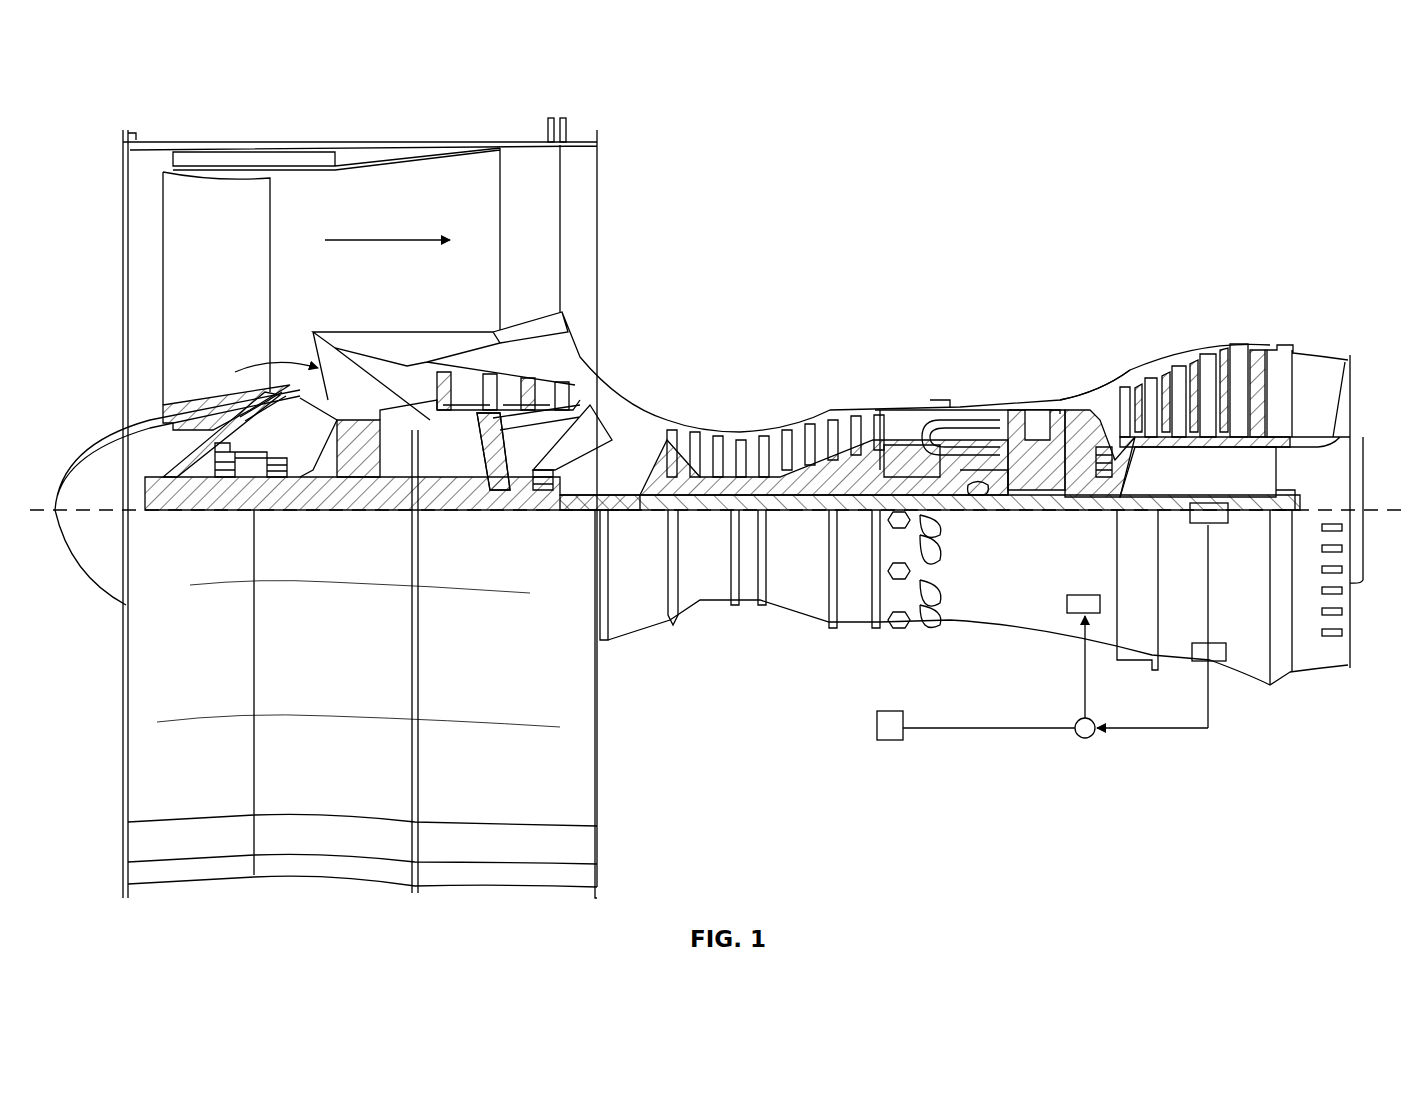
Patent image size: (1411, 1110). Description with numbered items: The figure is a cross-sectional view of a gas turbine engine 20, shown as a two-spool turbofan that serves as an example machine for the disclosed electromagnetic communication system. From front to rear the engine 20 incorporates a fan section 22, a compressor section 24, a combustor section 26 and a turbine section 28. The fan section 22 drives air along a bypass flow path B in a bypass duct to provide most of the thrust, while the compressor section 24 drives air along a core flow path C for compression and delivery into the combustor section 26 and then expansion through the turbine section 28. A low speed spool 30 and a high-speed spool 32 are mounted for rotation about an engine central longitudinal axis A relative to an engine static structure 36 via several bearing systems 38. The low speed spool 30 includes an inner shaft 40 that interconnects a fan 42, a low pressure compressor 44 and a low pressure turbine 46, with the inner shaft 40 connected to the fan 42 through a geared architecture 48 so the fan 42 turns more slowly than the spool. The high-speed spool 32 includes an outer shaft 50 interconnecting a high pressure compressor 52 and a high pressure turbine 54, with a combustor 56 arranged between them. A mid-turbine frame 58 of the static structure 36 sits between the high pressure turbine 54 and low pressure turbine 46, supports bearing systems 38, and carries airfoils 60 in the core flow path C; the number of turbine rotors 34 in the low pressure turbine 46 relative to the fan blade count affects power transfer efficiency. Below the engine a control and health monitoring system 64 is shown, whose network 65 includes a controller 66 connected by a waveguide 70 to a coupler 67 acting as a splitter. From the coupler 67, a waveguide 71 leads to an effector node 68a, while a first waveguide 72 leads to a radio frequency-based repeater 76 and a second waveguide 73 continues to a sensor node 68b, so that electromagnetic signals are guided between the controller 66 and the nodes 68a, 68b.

The gas turbine engine 20 is at (1170, 178).
The fan section 22 is at (397, 130).
The compressor section 24 is at (788, 366).
The combustor section 26 is at (958, 368).
The turbine section 28 is at (1080, 318).
The low speed spool 30 is at (815, 512).
The high-speed spool 32 is at (873, 440).
The turbine rotors 34 is at (1290, 462).
The engine static structure 36 is at (855, 628).
The bearing systems 38 is at (218, 477).
The inner shaft 40 is at (610, 515).
The fan 42 is at (237, 262).
The low pressure compressor 44 is at (515, 385).
The low pressure turbine 46 is at (1170, 375).
The geared architecture 48 is at (360, 477).
The outer shaft 50 is at (978, 497).
The high pressure compressor 52 is at (778, 477).
The high pressure turbine 54 is at (1035, 410).
The combustor 56 is at (960, 424).
The mid-turbine frame 58 is at (1080, 394).
The airfoils 60 is at (1085, 420).
The control and health monitoring system 64 is at (1148, 755).
The network 65 is at (1272, 770).
The controller 66 is at (878, 730).
The coupler 67 is at (1090, 740).
The effector node 68a is at (1067, 600).
The sensor node 68b is at (1215, 526).
The waveguide 70 is at (940, 740).
The waveguide 71 is at (1085, 694).
The first waveguide 72 is at (1210, 725).
The second waveguide 73 is at (1208, 592).
The radio frequency-based repeater 76 is at (1222, 662).
The engine central longitudinal axis A is at (1372, 508).
The bypass flow path B is at (388, 240).
The core flow path C is at (240, 370).